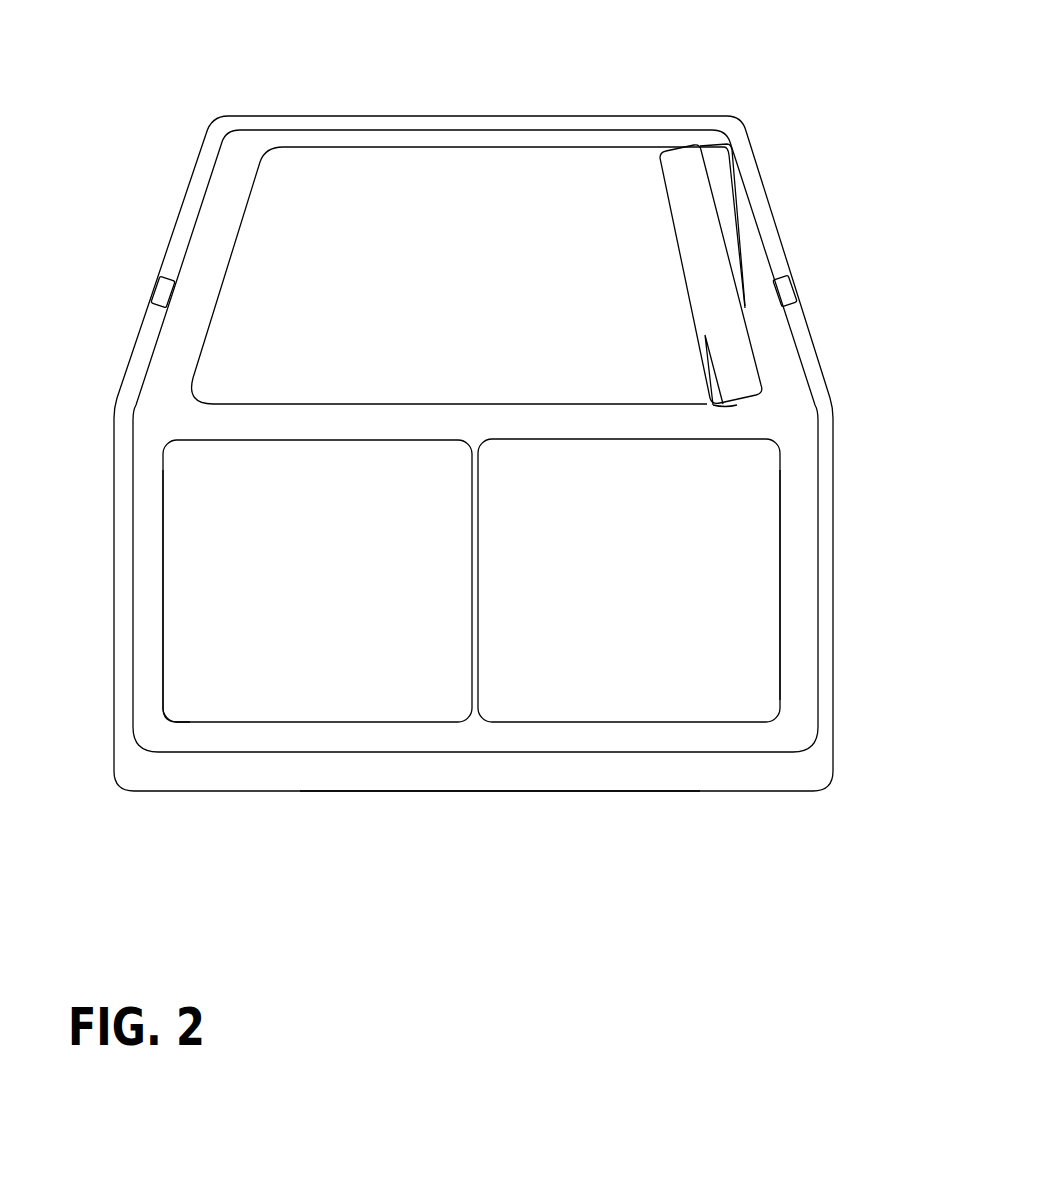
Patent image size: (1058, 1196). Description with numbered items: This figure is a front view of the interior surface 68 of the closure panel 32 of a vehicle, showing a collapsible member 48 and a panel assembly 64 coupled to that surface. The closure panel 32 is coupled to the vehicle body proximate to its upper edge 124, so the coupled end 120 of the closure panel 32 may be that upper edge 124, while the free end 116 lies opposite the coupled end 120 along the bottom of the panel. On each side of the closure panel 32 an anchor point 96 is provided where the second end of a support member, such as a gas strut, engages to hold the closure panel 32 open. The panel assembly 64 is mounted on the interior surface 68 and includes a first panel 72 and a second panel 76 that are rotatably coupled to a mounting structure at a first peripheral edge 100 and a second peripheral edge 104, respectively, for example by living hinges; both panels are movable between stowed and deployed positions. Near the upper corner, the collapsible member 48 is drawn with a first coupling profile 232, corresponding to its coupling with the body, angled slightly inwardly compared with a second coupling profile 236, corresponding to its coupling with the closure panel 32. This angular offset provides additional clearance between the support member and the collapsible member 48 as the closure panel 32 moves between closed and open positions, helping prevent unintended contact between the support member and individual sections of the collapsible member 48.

The closure panel 32 is at (736, 119).
The collapsible member 48 is at (737, 245).
The panel assembly 64 is at (160, 713).
The interior surface 68 is at (775, 425).
The first panel 72 is at (298, 601).
The second panel 76 is at (597, 601).
The anchor point 96 is at (160, 288).
The first peripheral edge 100 is at (163, 553).
The second peripheral edge 104 is at (780, 595).
The free end 116 is at (515, 793).
The coupled end 120 is at (532, 115).
The upper edge 124 is at (367, 115).
The first coupling profile 232 is at (678, 163).
The second coupling profile 236 is at (722, 163).